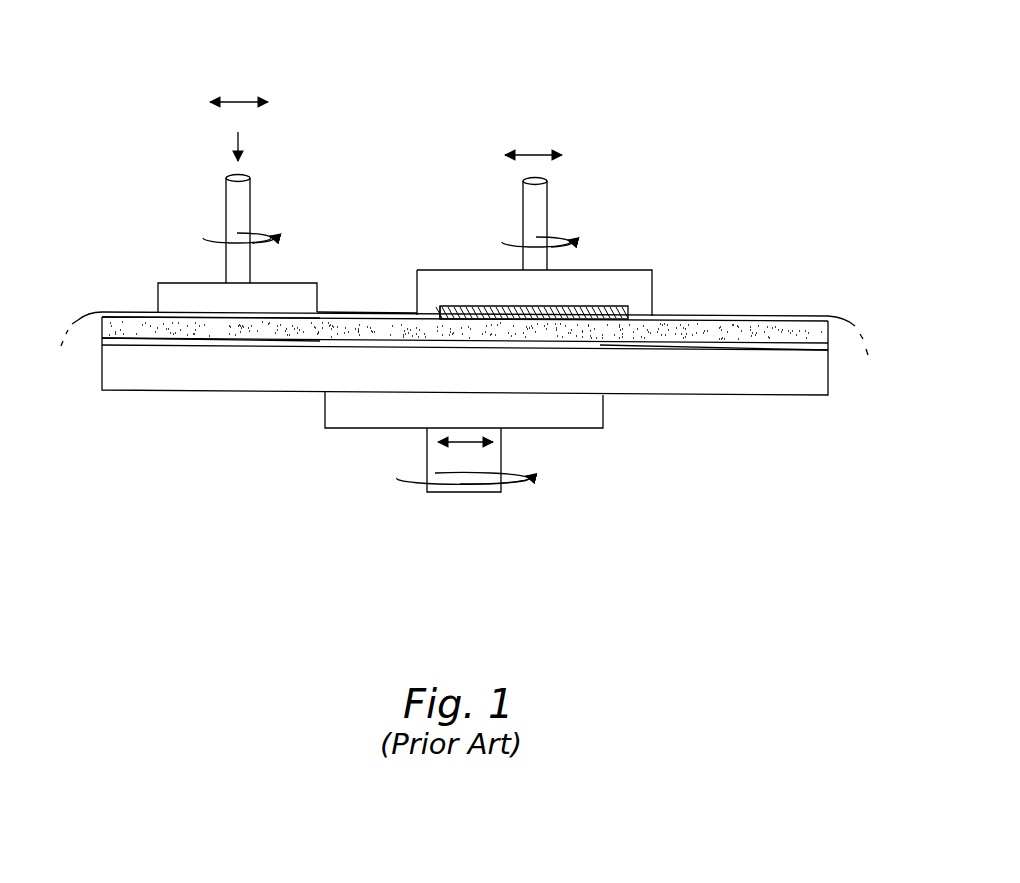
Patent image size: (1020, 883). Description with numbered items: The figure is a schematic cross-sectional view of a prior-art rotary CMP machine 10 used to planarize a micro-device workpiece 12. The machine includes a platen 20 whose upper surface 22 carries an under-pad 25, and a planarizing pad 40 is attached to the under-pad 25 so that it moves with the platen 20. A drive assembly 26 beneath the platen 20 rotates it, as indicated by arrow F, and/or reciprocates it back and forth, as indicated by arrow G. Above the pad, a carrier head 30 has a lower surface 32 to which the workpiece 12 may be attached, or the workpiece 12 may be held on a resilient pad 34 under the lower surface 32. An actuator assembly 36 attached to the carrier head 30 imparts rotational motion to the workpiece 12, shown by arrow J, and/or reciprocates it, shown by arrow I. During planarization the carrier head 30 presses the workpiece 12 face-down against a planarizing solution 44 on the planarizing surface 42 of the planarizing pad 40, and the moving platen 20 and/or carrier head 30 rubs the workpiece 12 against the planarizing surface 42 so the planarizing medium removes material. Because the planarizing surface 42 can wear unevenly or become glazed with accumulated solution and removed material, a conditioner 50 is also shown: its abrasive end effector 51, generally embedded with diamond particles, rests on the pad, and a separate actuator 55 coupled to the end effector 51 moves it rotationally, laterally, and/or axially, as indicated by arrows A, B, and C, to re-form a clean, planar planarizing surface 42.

The rotary CMP machine 10 is at (633, 57).
The micro-device workpiece 12 is at (593, 307).
The platen 20 is at (465, 356).
The upper surface 22 is at (778, 352).
The under-pad 25 is at (700, 347).
The drive assembly 26 is at (556, 440).
The carrier head 30 is at (532, 221).
The lower surface 32 is at (442, 305).
The resilient pad 34 is at (467, 307).
The actuator assembly 36 is at (502, 197).
The planarizing pad 40 is at (195, 328).
The planarizing surface 42 is at (352, 312).
The planarizing solution 44 is at (262, 316).
The conditioner 50 is at (210, 193).
The abrasive end effector 51 is at (183, 269).
The actuator 55 is at (271, 188).